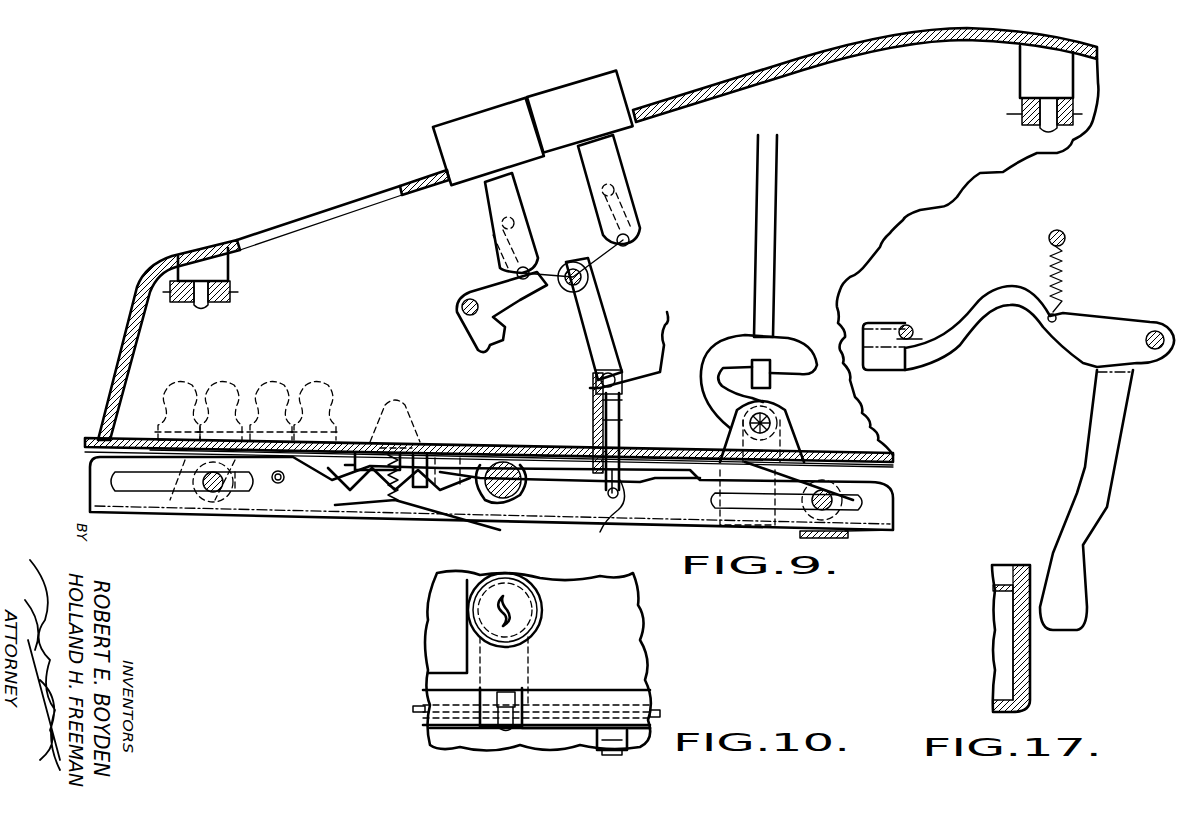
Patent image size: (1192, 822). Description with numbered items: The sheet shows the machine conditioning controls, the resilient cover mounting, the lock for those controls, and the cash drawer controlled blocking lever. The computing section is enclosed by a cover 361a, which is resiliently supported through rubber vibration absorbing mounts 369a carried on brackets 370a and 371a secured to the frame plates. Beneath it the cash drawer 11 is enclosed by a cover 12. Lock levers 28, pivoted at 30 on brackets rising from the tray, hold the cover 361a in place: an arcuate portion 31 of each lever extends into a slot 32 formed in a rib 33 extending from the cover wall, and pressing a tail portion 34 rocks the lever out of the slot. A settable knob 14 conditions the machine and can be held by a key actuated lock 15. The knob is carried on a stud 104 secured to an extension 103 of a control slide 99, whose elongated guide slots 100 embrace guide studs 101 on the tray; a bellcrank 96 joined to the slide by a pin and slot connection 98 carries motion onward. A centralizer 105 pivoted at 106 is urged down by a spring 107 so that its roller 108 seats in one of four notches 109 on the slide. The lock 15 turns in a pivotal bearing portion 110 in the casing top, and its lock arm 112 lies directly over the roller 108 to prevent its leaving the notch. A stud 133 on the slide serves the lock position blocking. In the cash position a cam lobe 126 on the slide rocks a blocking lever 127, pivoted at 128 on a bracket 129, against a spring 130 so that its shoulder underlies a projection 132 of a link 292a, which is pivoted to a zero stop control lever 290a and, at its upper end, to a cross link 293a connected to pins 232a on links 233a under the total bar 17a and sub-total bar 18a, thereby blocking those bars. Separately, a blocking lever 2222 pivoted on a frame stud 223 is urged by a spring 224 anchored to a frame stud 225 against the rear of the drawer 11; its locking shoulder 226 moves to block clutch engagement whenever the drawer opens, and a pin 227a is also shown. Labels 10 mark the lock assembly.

In FIG. 9, the cover 12 is at (86, 441).
In FIG. 9, the settable knob 14 is at (222, 392).
In FIG. 9, the lock assembly 10 is at (349, 433).
In FIG. 9, the key actuated lock 15 is at (412, 422).
In FIG. 10, the key actuated lock 15 is at (518, 608).
In FIG. 9, the pivotal bearing portion 110 is at (420, 440).
In FIG. 9, the lock arm 112 is at (442, 452).
In FIG. 10, the lock arm 112 is at (535, 676).
In FIG. 9, the roller 108 is at (365, 468).
In FIG. 10, the roller 108 is at (492, 712).
In FIG. 9, the spring 107 is at (392, 500).
In FIG. 9, the notches 109 is at (355, 470).
In FIG. 9, the stud 104 is at (190, 455).
In FIG. 9, the elongated guide slots 100 is at (140, 493).
In FIG. 9, the extension 103 is at (210, 480).
In FIG. 9, the guide studs 101 is at (213, 500).
In FIG. 9, the stud 133 is at (275, 485).
In FIG. 9, the centralizer 105 is at (480, 498).
In FIG. 10, the centralizer 105 is at (560, 730).
In FIG. 9, the pivot 106 is at (503, 500).
In FIG. 10, the pivot 106 is at (598, 754).
In FIG. 9, the spring 130 is at (607, 500).
In FIG. 9, the cam lobe 126 is at (612, 505).
In FIG. 9, the control slide 99 is at (680, 525).
In FIG. 10, the control slide 99 is at (662, 713).
In FIG. 9, the tail portion 34 is at (740, 520).
In FIG. 9, the pin and slot connection 98 is at (826, 539).
In FIG. 9, the bellcrank 96 is at (870, 531).
In FIG. 9, the bracket 129 is at (594, 418).
In FIG. 9, the blocking lever 127 is at (621, 426).
In FIG. 9, the pivot 128 is at (621, 445).
In FIG. 9, the projection 132 is at (622, 397).
In FIG. 9, the zero stop control lever 290a is at (667, 318).
In FIG. 9, the link 292a is at (603, 332).
In FIG. 9, the cross link 293a is at (568, 283).
In FIG. 9, the pins 232a is at (516, 274).
In FIG. 9, the links 233a is at (503, 326).
In FIG. 9, the sub-total bar 18a is at (506, 110).
In FIG. 9, the total bar 17a is at (605, 77).
In FIG. 9, the cover 361a is at (224, 247).
In FIG. 9, the bracket 371a is at (240, 292).
In FIG. 9, the vibration absorbing mounts 369a is at (212, 304).
In FIG. 9, the bracket 370a is at (1018, 114).
In FIG. 9, the rib 33 is at (780, 295).
In FIG. 9, the slot 32 is at (776, 340).
In FIG. 9, the arcuate portion 31 is at (812, 362).
In FIG. 9, the lock levers 28 is at (718, 343).
In FIG. 9, the pivot 30 is at (778, 422).
In FIG. 9, the frame stud 225 is at (1065, 236).
In FIG. 9, the spring 224 is at (1060, 300).
In FIG. 9, the frame stud 223 is at (1150, 322).
In FIG. 9, the pin 227a is at (912, 326).
In FIG. 9, the blocking lever 2222 is at (980, 318).
In FIG. 9, the locking shoulder 226 is at (905, 358).
In FIG. 17, the cash drawer 11 is at (1042, 674).